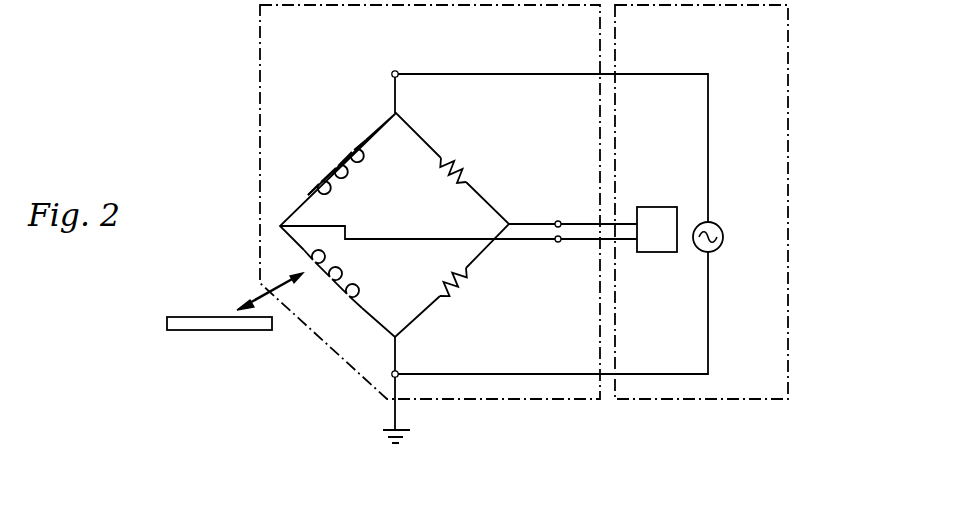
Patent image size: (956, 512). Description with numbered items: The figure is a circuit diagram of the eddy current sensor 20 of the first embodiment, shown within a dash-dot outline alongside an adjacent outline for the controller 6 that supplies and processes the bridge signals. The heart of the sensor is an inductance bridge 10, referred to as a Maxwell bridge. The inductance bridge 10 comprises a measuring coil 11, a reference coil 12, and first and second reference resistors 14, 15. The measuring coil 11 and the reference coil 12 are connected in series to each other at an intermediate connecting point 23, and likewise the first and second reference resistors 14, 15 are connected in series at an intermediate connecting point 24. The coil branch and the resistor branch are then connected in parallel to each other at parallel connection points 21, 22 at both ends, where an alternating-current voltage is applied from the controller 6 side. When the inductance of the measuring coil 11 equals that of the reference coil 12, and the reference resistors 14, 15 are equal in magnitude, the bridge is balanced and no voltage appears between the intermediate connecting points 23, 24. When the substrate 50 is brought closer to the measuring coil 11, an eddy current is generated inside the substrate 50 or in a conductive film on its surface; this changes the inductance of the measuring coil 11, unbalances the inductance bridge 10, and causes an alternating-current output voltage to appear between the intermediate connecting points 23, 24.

The laser sensor controller 6 is at (663, 401).
The inductance bridge 10 is at (362, 126).
The measuring coil 11 is at (362, 300).
The reference coil 12 is at (309, 190).
The first reference resistor 14 is at (465, 288).
The second reference resistor 15 is at (470, 158).
The eddy current sensor 20 is at (472, 401).
The parallel connection point 21 is at (395, 70).
The parallel connection point 22 is at (398, 372).
The intermediate connecting point 23 is at (559, 246).
The intermediate connecting point 24 is at (560, 219).
The substrate 50 is at (194, 320).